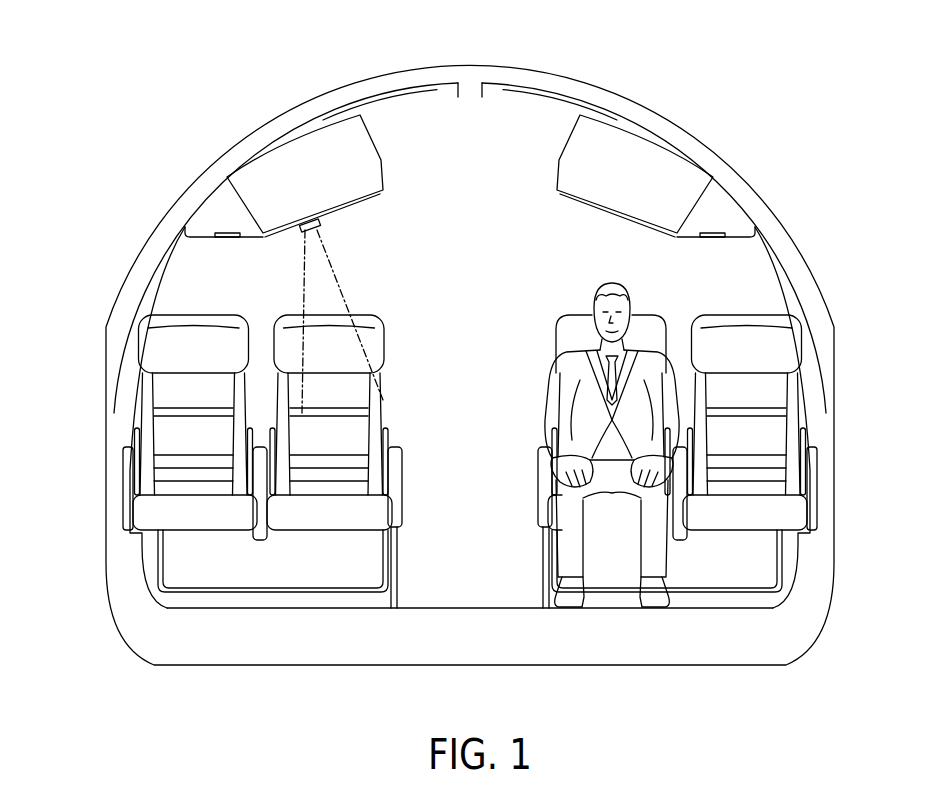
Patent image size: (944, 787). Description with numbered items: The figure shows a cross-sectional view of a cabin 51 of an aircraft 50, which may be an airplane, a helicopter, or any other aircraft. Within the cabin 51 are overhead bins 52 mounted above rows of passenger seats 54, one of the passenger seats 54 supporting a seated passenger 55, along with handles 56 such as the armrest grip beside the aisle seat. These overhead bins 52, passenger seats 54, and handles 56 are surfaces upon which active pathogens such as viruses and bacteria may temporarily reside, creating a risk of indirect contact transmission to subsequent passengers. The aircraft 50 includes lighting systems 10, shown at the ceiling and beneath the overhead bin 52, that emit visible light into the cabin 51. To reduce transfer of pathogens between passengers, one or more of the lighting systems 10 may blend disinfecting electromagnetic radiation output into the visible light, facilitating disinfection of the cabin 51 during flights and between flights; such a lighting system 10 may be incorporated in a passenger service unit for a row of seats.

The lighting system 10 is at (453, 95).
The aircraft 50 is at (118, 72).
The cabin 51 is at (492, 513).
The overhead bin 52 is at (260, 196).
The passenger seat 54 is at (353, 398).
The passenger 55 is at (697, 292).
The handle 56 is at (402, 460).